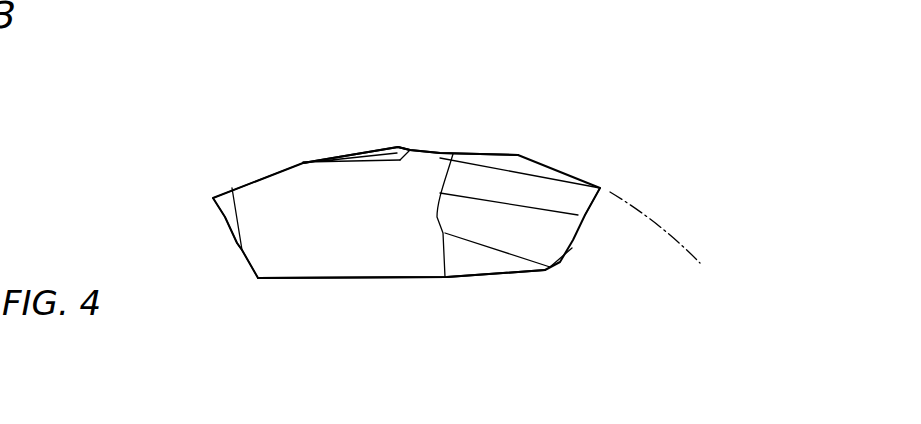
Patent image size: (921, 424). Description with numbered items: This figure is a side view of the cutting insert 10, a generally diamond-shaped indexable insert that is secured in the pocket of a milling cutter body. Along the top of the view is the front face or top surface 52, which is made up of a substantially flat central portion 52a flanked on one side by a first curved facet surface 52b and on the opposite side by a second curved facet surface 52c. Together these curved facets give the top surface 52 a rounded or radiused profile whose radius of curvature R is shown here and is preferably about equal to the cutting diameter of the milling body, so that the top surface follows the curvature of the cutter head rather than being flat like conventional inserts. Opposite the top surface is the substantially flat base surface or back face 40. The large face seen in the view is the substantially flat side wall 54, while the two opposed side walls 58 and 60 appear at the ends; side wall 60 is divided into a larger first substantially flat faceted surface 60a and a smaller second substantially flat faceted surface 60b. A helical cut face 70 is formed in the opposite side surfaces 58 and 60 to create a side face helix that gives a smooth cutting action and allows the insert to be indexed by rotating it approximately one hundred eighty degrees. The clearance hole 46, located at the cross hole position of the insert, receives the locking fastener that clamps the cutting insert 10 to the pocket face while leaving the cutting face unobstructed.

The cutting insert 10 is at (509, 63).
The base surface or back face 40 is at (320, 279).
The clearance hole 46 is at (373, 155).
The top surface 52 is at (465, 154).
The central portion 52a is at (393, 150).
The first curved facet surface 52b is at (521, 199).
The second curved facet surface 52c is at (275, 170).
The side wall 54 is at (279, 242).
The side wall 58 is at (229, 236).
The side wall 60 is at (533, 230).
The first substantially flat faceted surface 60a is at (488, 262).
The second substantially flat faceted surface 60b is at (558, 258).
The helical cut face 70 is at (227, 204).
The radius of curvature R is at (678, 252).